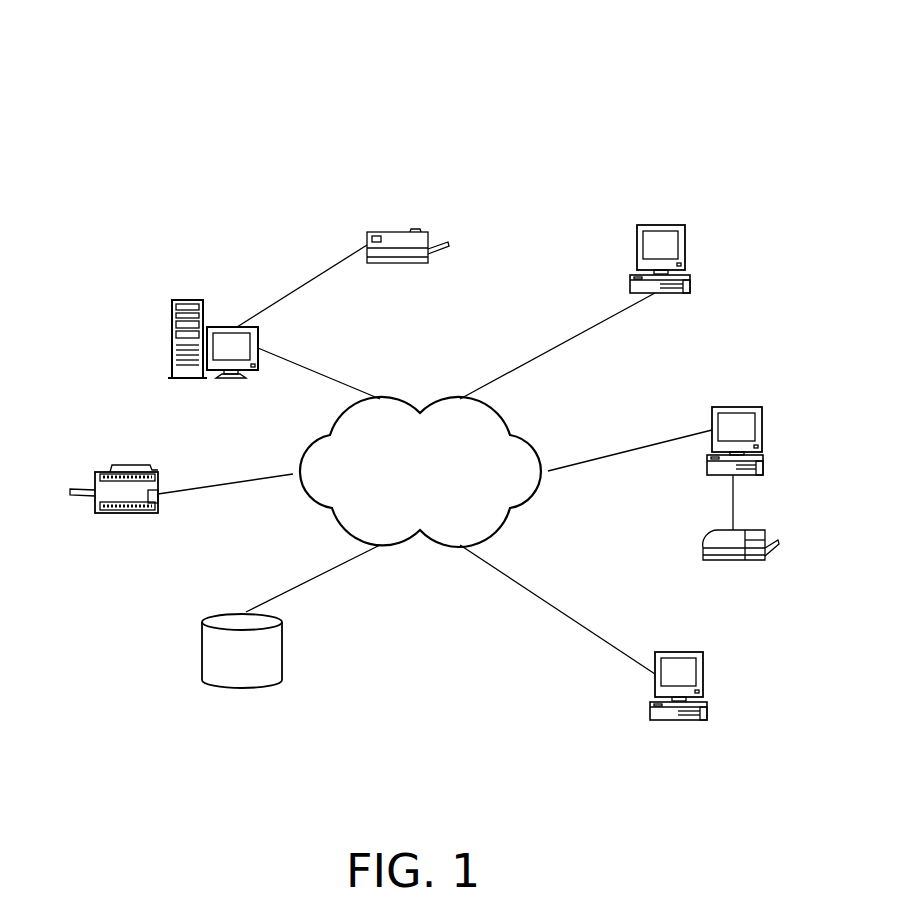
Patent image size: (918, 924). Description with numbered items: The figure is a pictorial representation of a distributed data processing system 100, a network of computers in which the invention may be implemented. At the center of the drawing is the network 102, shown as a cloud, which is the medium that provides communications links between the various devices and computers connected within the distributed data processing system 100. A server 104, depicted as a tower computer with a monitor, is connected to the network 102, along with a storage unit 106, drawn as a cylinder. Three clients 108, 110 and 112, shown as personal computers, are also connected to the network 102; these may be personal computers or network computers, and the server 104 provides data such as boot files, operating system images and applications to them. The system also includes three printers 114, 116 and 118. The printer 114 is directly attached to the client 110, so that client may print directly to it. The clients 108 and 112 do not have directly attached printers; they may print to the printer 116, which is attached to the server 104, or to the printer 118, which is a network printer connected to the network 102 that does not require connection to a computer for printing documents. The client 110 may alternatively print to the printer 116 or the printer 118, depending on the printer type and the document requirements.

The distributed data processing system 100 is at (677, 108).
The network 102 is at (446, 483).
The server 104 is at (222, 378).
The storage unit 106 is at (232, 677).
The client 108 is at (660, 231).
The client 110 is at (739, 416).
The client 112 is at (651, 712).
The printer 114 is at (755, 556).
The printer 116 is at (392, 238).
The printer 118 is at (123, 512).